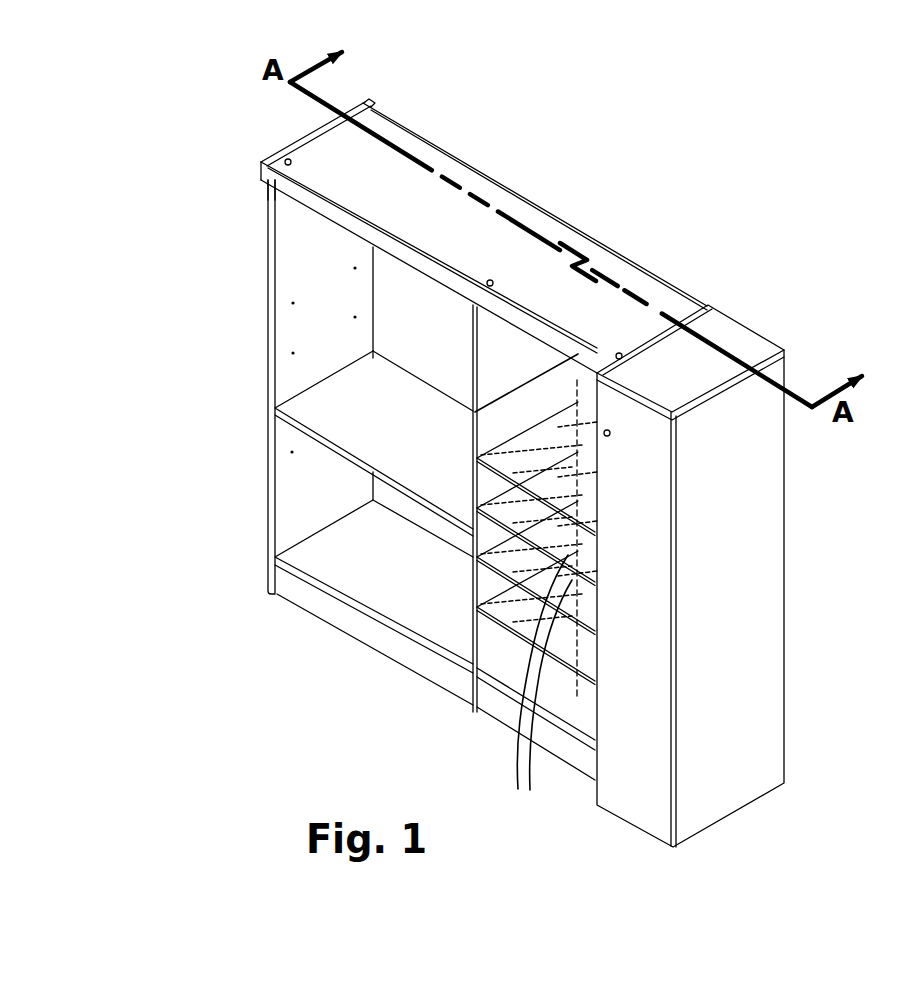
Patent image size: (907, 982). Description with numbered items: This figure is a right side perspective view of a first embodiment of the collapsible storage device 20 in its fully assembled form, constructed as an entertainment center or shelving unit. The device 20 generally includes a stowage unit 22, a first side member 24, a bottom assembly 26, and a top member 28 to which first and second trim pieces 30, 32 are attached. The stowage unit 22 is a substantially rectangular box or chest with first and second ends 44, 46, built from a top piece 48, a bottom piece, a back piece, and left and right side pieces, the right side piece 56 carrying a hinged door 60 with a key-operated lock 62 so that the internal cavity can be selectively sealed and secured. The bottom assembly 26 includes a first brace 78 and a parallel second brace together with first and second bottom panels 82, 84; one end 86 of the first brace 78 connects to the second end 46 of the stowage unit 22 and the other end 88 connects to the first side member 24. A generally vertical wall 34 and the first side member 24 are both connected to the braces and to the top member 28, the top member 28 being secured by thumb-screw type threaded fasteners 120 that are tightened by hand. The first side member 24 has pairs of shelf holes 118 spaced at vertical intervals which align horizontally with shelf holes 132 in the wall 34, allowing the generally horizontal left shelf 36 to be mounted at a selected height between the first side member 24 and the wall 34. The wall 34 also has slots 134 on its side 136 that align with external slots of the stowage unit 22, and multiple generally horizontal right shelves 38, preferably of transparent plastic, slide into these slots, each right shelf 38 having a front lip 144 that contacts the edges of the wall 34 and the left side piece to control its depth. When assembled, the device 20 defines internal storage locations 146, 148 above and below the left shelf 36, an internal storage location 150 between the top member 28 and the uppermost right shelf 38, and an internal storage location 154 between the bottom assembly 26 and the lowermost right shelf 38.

The collapsible storage device 20 is at (560, 192).
The stowage unit 22 is at (788, 605).
The first side member 24 is at (297, 267).
The bottom assembly 26 is at (389, 660).
The top member 28 is at (425, 193).
The first trim piece 30 is at (298, 140).
The second trim piece 32 is at (274, 183).
The wall 34 is at (490, 358).
The left shelf 36 is at (322, 407).
The right shelves 38 is at (562, 527).
The first end 44 is at (742, 343).
The second end 46 is at (723, 817).
The top piece 48 is at (745, 340).
The right side piece 56 is at (765, 505).
The door 60 is at (627, 803).
The lock 62 is at (610, 440).
The first brace 78 is at (318, 612).
The first bottom panel 82 is at (323, 553).
The second bottom panel 84 is at (560, 723).
The one end of first brace 86 is at (582, 768).
The other end of first brace 88 is at (292, 589).
The shelf holes 118 is at (290, 312).
The threaded fasteners 120 is at (291, 163).
The shelf holes 132 is at (553, 395).
The slots 134 is at (480, 387).
The side 136 is at (462, 666).
The front lip 144 is at (480, 480).
The internal storage location 146 is at (369, 383).
The internal storage location 148 is at (366, 570).
The internal storage location 150 is at (557, 435).
The internal storage location 154 is at (486, 716).